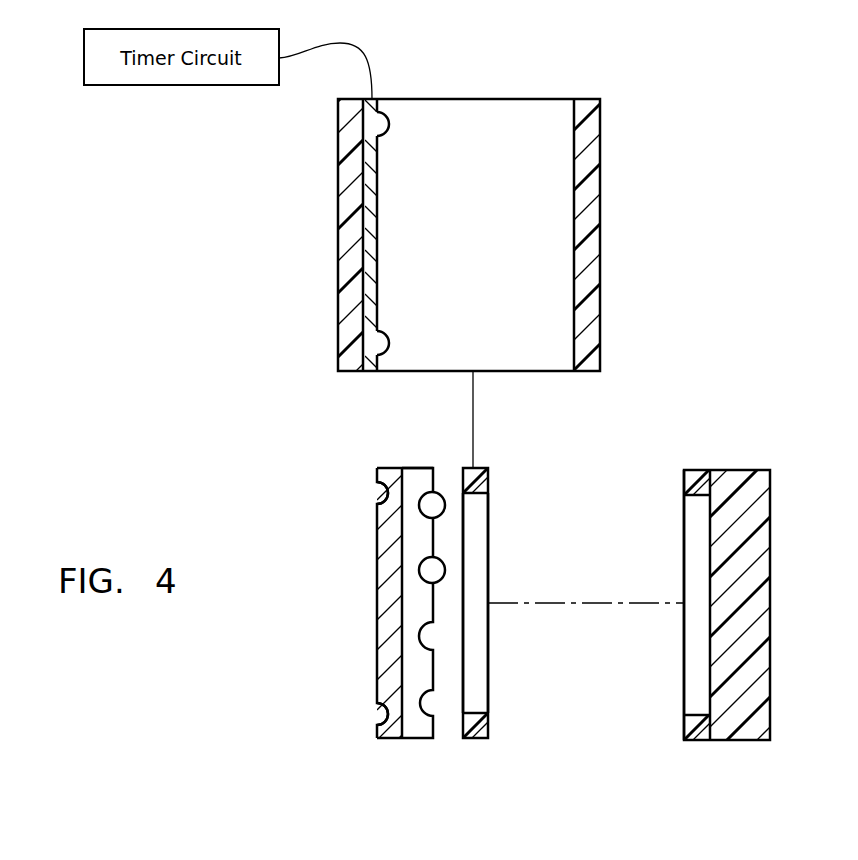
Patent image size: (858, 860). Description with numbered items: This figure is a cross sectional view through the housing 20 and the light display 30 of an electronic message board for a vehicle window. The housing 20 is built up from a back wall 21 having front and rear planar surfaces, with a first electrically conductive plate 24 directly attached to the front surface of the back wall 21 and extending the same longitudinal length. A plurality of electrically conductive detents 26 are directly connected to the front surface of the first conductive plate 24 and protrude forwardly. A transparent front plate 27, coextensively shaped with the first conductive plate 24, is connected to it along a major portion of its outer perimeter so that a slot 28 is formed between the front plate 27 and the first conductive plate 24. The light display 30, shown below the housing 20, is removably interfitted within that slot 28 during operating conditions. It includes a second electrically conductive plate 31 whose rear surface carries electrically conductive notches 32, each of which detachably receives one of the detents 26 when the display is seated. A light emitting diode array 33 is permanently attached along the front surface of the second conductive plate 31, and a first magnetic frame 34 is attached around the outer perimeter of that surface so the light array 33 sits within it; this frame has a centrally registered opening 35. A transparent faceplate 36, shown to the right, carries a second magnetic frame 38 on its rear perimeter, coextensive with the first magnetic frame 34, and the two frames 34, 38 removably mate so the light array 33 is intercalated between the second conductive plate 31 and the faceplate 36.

The housing 20 is at (613, 214).
The back wall 21 is at (345, 318).
The first electrically conductive plate 24 is at (369, 372).
The electrically conductive detents 26 is at (388, 120).
The transparent front plate 27 is at (598, 100).
The slot 28 is at (480, 117).
The light display 30 is at (449, 754).
The second electrically conductive plate 31 is at (380, 680).
The electrically conductive notches 32 is at (380, 490).
The light emitting diode array 33 is at (450, 467).
The first magnetic frame 34 is at (488, 470).
The centrally registered opening 35 is at (472, 520).
The transparent faceplate 36 is at (745, 488).
The second magnetic frame 38 is at (698, 480).